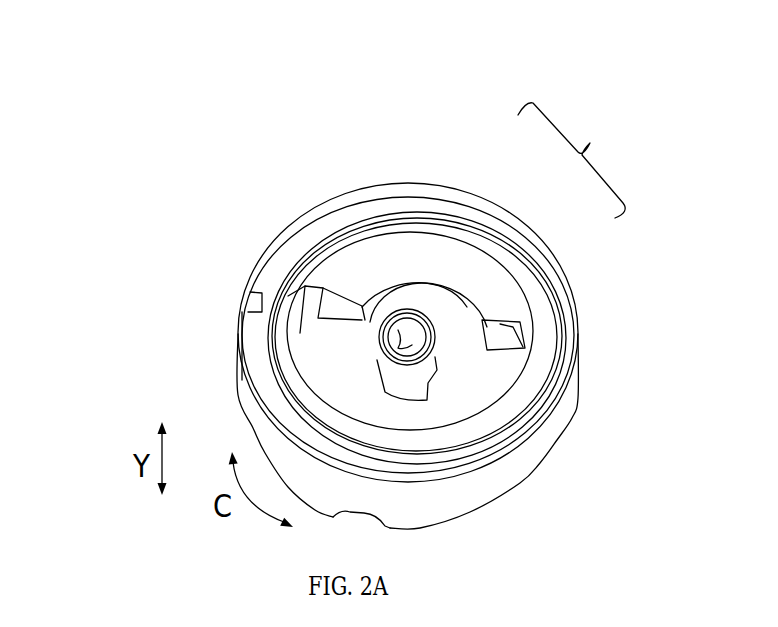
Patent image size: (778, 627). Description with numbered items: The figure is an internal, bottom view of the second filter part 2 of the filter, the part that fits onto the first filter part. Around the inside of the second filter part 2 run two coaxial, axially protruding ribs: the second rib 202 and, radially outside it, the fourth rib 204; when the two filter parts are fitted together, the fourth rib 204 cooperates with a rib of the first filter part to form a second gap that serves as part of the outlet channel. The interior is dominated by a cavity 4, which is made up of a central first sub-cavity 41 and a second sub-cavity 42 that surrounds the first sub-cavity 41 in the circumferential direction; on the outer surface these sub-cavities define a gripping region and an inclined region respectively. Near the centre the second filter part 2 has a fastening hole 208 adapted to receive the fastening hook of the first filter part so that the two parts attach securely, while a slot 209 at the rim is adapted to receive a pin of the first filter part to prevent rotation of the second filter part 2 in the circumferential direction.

The second filter part 2 is at (206, 78).
The second rib 202 is at (302, 272).
The fourth rib 204 is at (263, 272).
The slot 209 is at (229, 285).
The fastening hole 208 is at (372, 345).
The cavity 4 is at (571, 160).
The first sub-cavity 41 is at (472, 352).
The second sub-cavity 42 is at (432, 262).